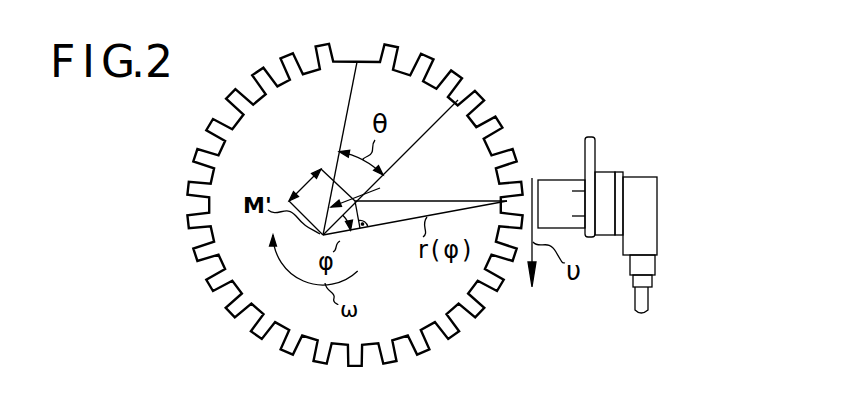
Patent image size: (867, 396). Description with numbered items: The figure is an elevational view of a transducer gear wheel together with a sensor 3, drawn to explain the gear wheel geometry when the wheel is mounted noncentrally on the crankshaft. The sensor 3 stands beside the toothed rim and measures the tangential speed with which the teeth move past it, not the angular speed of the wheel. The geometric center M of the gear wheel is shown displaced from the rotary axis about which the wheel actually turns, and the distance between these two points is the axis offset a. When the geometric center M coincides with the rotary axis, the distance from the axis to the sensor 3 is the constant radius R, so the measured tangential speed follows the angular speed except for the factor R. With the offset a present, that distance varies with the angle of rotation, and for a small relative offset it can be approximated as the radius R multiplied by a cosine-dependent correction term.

The sensor 3 is at (643, 182).
The geometric center M is at (380, 188).
The radius R is at (452, 201).
The axis offset a is at (303, 188).